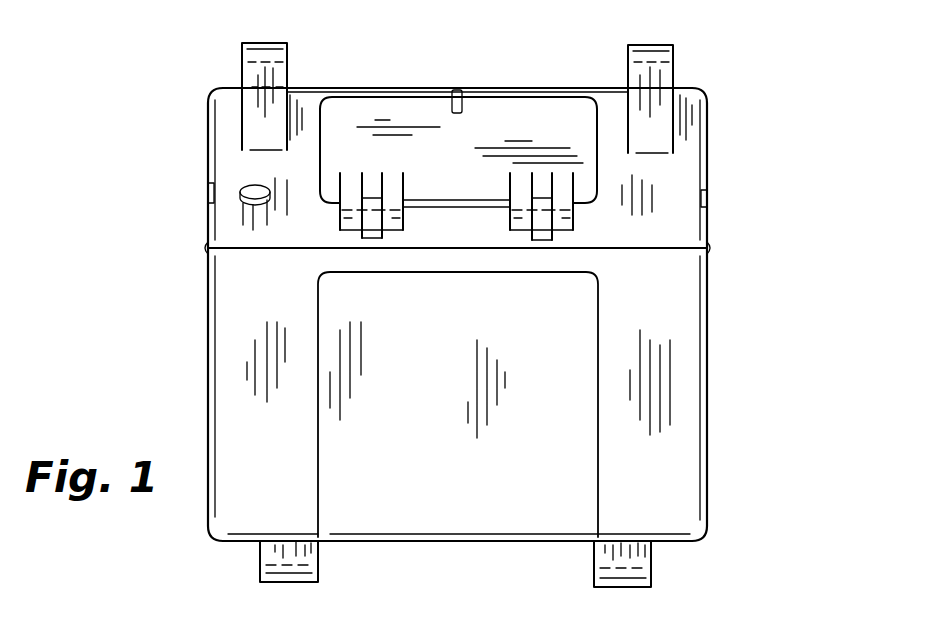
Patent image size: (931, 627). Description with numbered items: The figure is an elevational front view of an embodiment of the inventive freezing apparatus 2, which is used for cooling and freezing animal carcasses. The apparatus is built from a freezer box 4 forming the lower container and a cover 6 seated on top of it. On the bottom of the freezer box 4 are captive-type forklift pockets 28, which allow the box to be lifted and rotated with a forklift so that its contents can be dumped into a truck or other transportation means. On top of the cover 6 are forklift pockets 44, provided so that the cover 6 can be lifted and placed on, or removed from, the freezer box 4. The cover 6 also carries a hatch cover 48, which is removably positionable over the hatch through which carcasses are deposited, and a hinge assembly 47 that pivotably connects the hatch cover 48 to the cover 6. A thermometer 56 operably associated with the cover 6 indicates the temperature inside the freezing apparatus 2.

The freezing apparatus 2 is at (146, 126).
The freezer box 4 is at (700, 352).
The cover 6 is at (675, 175).
The captive-type forklift pockets 28 is at (260, 553).
The forklift pockets 44 is at (243, 52).
The hinge assembly 47 is at (517, 233).
The hatch cover 48 is at (405, 107).
The thermometer 56 is at (245, 193).